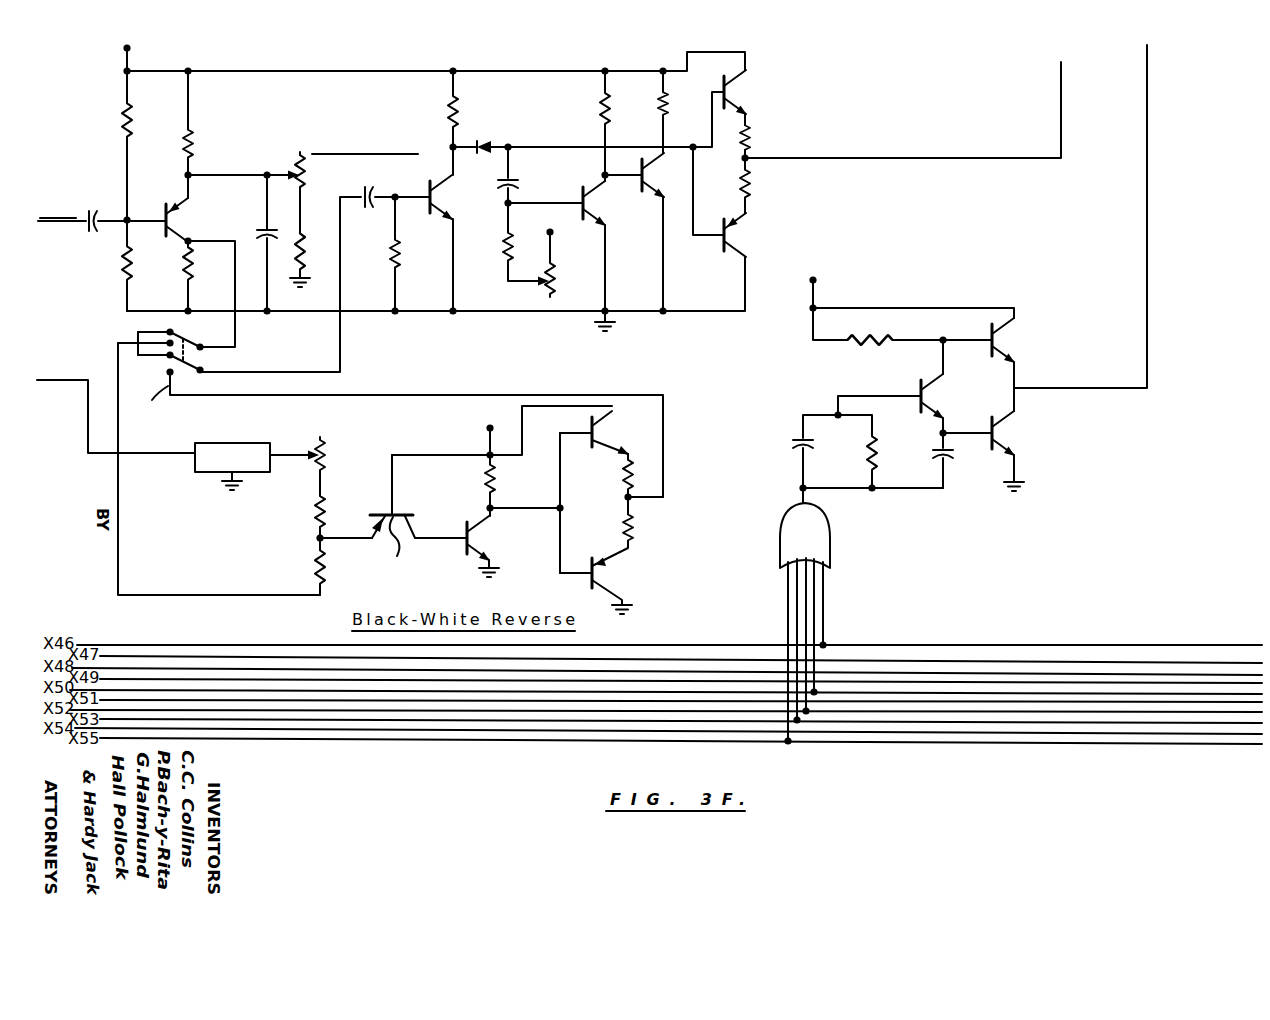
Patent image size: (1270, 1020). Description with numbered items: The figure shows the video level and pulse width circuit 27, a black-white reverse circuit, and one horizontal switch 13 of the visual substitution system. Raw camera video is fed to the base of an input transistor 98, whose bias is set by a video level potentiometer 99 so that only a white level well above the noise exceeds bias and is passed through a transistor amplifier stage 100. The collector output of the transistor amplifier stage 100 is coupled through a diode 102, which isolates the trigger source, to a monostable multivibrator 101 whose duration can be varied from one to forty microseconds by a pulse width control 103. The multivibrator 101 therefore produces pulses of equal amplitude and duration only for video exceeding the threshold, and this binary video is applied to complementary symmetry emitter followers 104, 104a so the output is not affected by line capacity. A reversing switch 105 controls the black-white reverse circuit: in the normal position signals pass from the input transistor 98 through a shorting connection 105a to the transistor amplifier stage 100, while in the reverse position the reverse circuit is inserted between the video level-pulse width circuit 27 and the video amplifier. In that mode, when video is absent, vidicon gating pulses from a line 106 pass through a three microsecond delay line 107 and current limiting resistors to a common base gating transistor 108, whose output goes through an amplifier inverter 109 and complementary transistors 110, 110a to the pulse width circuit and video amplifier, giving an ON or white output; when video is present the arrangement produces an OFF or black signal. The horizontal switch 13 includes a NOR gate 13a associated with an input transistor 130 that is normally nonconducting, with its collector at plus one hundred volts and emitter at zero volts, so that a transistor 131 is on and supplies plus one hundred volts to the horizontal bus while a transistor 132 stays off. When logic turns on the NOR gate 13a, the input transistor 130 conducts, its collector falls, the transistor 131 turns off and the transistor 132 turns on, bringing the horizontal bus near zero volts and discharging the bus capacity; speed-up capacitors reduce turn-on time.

The video level and pulse width circuit 27 is at (710, 374).
The input transistor 98 is at (185, 223).
The video level potentiometer 99 is at (292, 162).
The transistor amplifier stage 100 is at (441, 201).
The monostable multivibrator 101 is at (636, 217).
The diode 102 is at (484, 145).
The pulse width control 103 is at (555, 291).
The complementary symmetry emitter follower 104 is at (738, 99).
The complementary symmetry emitter follower 104a is at (743, 247).
The reversing switch 105 is at (201, 351).
The shorting connection 105a is at (138, 333).
The line 106 is at (118, 465).
The delay line 107 is at (221, 443).
The common base gating transistor 108 is at (391, 516).
The amplifier inverter 109 is at (480, 540).
The complementary transistor 110 is at (600, 434).
The complementary transistor 110a is at (606, 578).
The horizontal switch 13 is at (970, 575).
The NOR gate 13a is at (816, 540).
The input transistor 130 is at (931, 395).
The transistor 131 is at (1005, 330).
The transistor 132 is at (1007, 435).